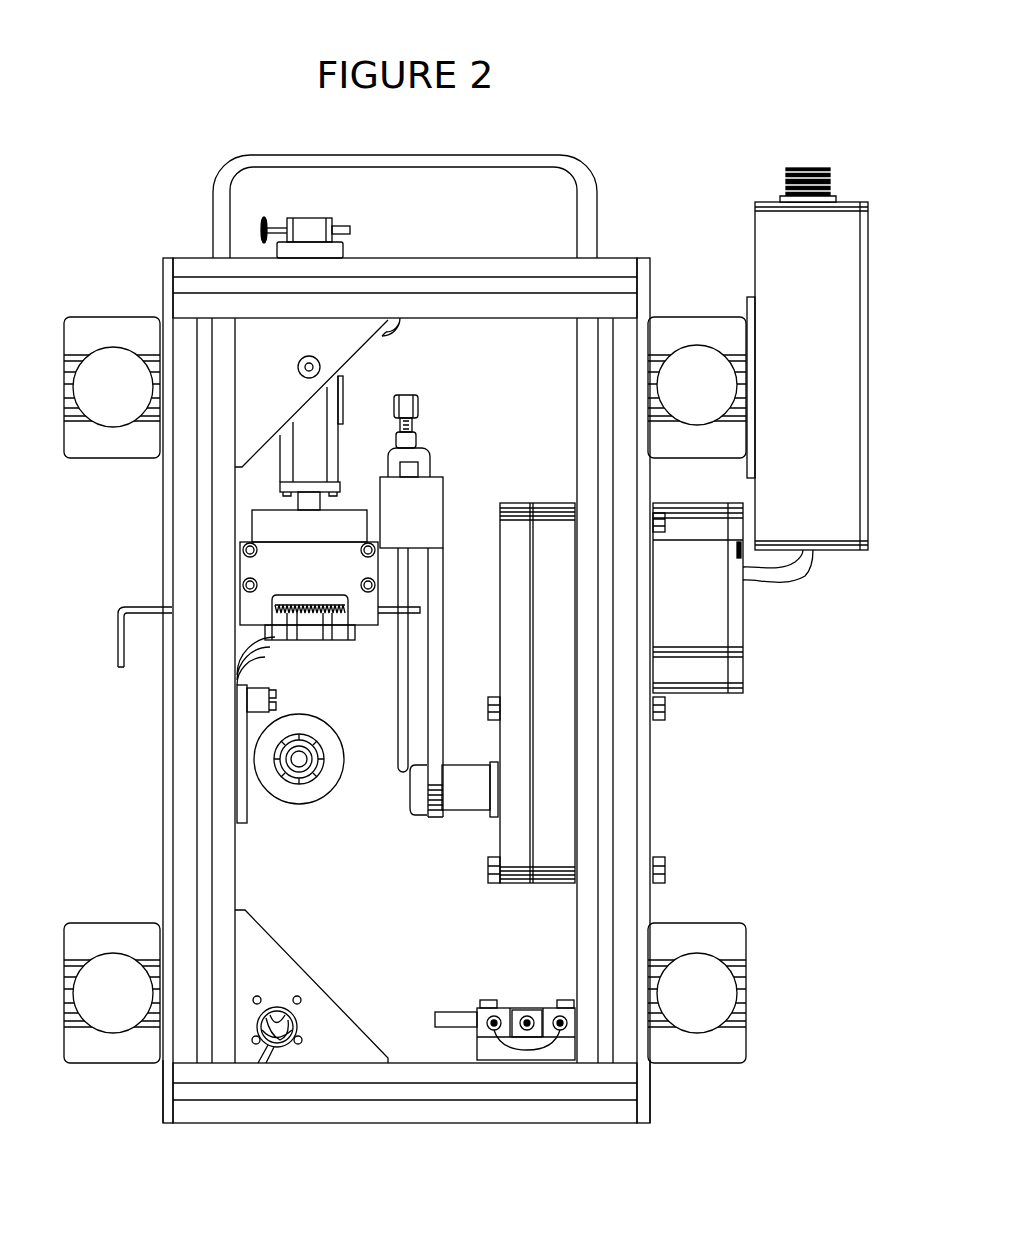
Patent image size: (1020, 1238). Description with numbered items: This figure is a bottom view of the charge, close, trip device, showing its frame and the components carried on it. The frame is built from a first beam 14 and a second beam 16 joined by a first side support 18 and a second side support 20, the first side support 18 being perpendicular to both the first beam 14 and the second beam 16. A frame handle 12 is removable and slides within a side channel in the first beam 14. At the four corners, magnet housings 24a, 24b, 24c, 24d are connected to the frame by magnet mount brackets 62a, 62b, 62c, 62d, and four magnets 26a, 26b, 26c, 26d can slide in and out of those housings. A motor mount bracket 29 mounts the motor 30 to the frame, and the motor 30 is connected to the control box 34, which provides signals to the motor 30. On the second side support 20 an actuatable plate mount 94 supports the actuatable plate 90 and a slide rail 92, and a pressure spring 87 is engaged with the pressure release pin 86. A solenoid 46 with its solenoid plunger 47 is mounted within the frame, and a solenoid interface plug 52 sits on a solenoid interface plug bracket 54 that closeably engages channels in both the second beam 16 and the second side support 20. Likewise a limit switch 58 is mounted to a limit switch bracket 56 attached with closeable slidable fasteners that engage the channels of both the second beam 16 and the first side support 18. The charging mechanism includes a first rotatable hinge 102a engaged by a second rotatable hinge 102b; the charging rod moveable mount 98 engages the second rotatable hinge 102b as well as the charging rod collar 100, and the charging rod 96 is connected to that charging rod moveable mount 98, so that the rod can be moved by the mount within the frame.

The frame handle 12 is at (392, 158).
The first beam 14 is at (484, 262).
The second beam 16 is at (437, 1118).
The first side support 18 is at (580, 936).
The second side support 20 is at (183, 848).
The magnet housing 24a is at (732, 320).
The magnet housing 24b is at (147, 318).
The magnet housing 24c is at (147, 1056).
The magnet housing 24d is at (732, 1057).
The magnet 26a is at (694, 365).
The magnet 26b is at (112, 380).
The magnet 26c is at (112, 1013).
The magnet 26d is at (694, 1013).
The motor mount bracket 29 is at (645, 776).
The motor 30 is at (707, 622).
The control box 34 is at (850, 323).
The solenoid 46 is at (262, 792).
The solenoid plunger 47 is at (306, 772).
The solenoid interface plug 52 is at (277, 1005).
The solenoid interface plug bracket 54 is at (270, 958).
The limit switch bracket 56 is at (485, 1047).
The limit switch 58 is at (465, 1018).
The magnet mount bracket 62a is at (644, 260).
The magnet mount bracket 62b is at (166, 258).
The magnet mount bracket 62c is at (168, 1125).
The magnet mount bracket 62d is at (645, 1125).
The pressure release pin 86 is at (122, 605).
The pressure spring 87 is at (312, 613).
The actuatable plate 90 is at (272, 522).
The slide rail 92 is at (345, 632).
The actuatable plate mount 94 is at (376, 618).
The charging rod 96 is at (398, 722).
The charging rod moveable mount 98 is at (441, 496).
The charging rod collar 100 is at (462, 804).
The first rotatable hinge 102a is at (422, 406).
The second rotatable hinge 102b is at (430, 466).